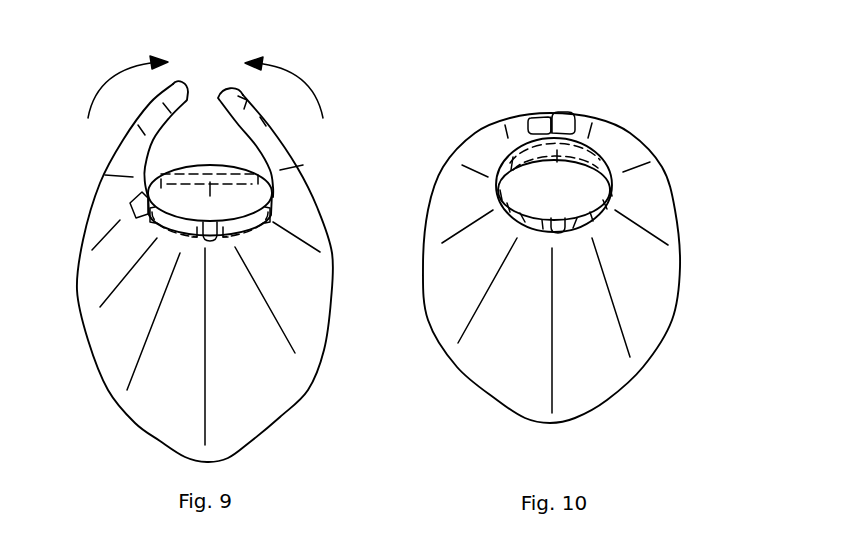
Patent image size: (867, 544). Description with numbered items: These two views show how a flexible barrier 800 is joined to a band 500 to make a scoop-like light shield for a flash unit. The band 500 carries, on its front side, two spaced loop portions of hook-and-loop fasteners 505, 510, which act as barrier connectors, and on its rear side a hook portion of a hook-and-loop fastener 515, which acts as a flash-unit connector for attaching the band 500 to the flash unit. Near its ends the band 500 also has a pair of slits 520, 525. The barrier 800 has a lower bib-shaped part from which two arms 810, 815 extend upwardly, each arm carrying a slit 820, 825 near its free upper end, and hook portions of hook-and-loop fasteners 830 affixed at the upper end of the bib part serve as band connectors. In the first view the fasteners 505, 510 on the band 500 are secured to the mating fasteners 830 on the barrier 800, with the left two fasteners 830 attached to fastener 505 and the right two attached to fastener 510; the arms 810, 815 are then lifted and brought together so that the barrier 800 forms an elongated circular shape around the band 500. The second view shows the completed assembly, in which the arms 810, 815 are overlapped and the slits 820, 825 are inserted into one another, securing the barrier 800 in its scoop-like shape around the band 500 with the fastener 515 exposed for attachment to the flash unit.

In FIG. 9, the barrier 800 is at (74, 326).
In FIG. 10, the barrier 800 is at (458, 379).
In FIG. 9, the arm 810 is at (182, 84).
In FIG. 10, the arm 810 is at (572, 120).
In FIG. 9, the arm 815 is at (222, 90).
In FIG. 10, the arm 815 is at (528, 122).
In FIG. 9, the slit 820 is at (166, 105).
In FIG. 10, the slit 820 is at (551, 103).
In FIG. 9, the slit 825 is at (243, 98).
In FIG. 10, the slit 825 is at (552, 125).
In FIG. 9, the hook-and-loop fastener 830 is at (130, 203).
In FIG. 9, the band 500 is at (223, 236).
In FIG. 10, the band 500 is at (632, 207).
In FIG. 9, the hook-and-loop fastener 505 is at (272, 220).
In FIG. 9, the hook-and-loop fastener 510 is at (160, 225).
In FIG. 9, the hook-and-loop fastener 515 is at (211, 199).
In FIG. 10, the hook-and-loop fastener 515 is at (556, 168).
In FIG. 9, the slit 520 is at (305, 264).
In FIG. 10, the slit 520 is at (659, 252).
In FIG. 9, the slit 525 is at (211, 241).
In FIG. 10, the slit 525 is at (563, 228).